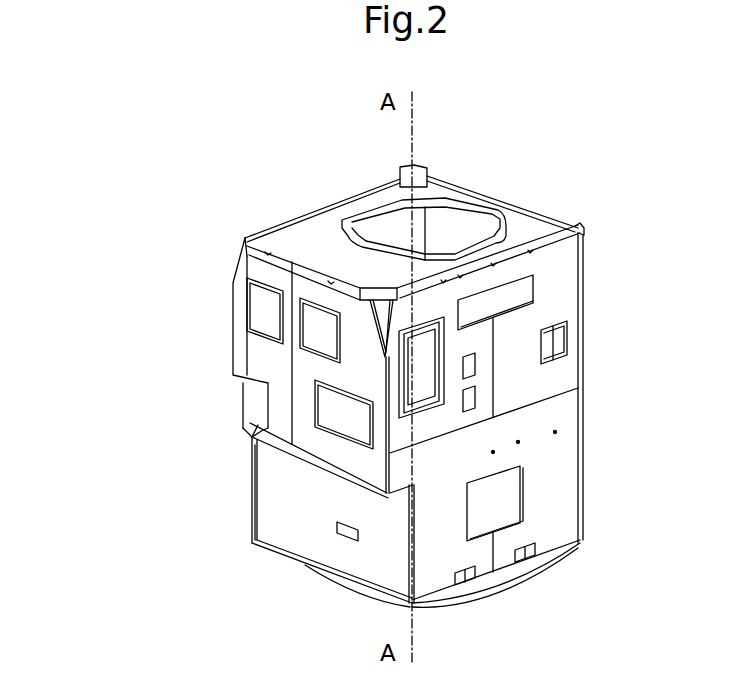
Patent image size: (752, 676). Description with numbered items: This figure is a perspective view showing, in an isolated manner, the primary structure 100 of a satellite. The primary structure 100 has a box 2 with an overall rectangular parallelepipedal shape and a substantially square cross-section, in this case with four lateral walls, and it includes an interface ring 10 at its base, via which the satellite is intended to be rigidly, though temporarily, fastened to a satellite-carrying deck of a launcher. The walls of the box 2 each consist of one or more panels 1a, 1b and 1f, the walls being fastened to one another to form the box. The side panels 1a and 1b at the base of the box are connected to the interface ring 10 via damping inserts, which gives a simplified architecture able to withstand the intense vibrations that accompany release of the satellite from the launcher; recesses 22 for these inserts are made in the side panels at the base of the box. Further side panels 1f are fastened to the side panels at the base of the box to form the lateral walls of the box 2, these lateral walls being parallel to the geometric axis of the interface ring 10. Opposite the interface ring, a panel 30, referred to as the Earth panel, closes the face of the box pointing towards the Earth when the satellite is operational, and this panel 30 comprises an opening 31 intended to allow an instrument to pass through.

The primary structure 100 is at (136, 181).
The box 2 is at (218, 310).
The panel 30 is at (322, 227).
The opening 31 is at (473, 222).
The side panel 1a is at (307, 530).
The side panel 1b is at (510, 387).
The further side panel 1f is at (253, 434).
The interface ring 10 is at (332, 586).
The recesses 22 is at (527, 557).